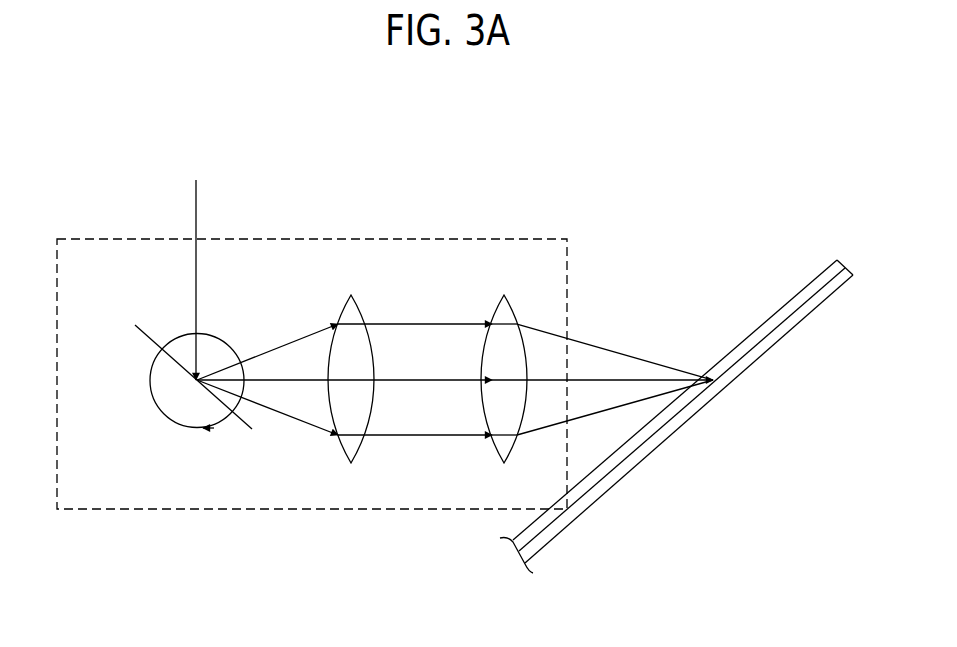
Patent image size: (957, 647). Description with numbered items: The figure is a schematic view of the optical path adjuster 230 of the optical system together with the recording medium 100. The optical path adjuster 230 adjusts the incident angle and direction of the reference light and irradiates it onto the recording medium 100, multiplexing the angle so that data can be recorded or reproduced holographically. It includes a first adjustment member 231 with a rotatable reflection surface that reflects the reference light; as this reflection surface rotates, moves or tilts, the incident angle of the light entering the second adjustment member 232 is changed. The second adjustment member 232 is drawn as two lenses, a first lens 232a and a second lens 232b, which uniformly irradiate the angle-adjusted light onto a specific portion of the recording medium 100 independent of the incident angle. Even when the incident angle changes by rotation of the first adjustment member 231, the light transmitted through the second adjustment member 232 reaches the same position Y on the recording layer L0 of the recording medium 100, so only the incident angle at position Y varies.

The optical path adjuster 230 is at (388, 239).
The first adjustment member 231 is at (136, 326).
The second adjustment member 232 is at (409, 455).
The first lens 232a is at (343, 450).
The second lens 232b is at (493, 450).
The recording medium 100 is at (787, 307).
The recording layer L0 is at (845, 268).
The position Y is at (726, 384).